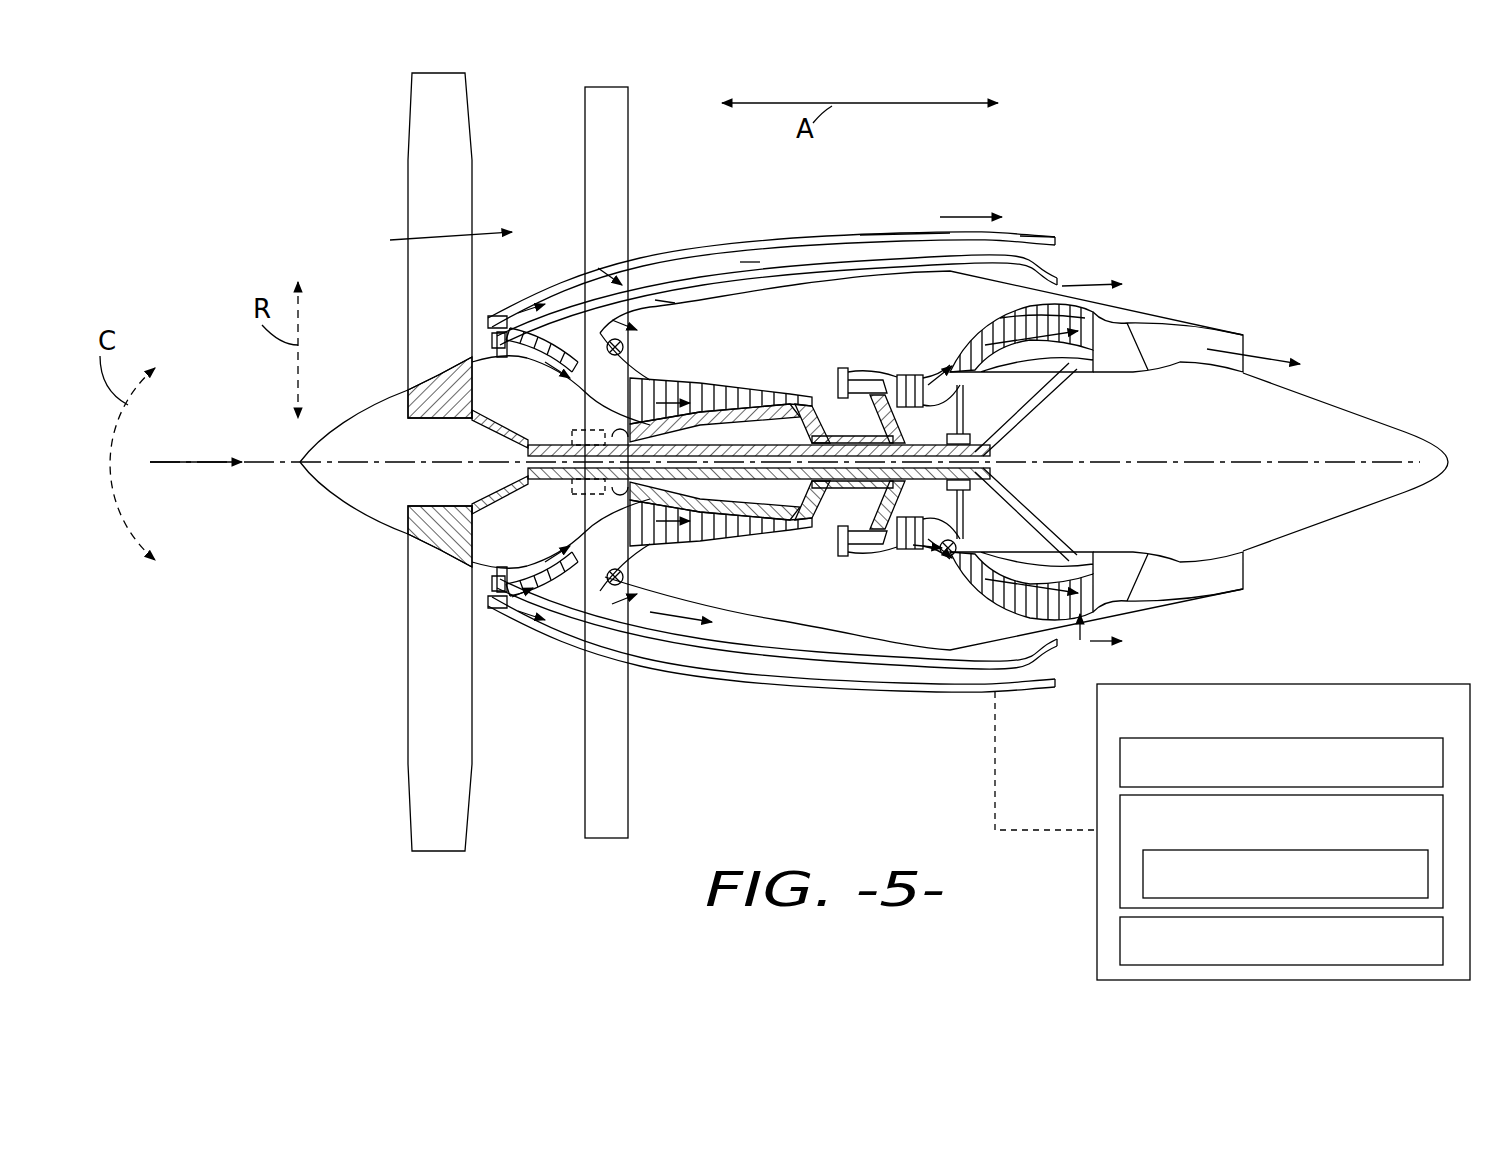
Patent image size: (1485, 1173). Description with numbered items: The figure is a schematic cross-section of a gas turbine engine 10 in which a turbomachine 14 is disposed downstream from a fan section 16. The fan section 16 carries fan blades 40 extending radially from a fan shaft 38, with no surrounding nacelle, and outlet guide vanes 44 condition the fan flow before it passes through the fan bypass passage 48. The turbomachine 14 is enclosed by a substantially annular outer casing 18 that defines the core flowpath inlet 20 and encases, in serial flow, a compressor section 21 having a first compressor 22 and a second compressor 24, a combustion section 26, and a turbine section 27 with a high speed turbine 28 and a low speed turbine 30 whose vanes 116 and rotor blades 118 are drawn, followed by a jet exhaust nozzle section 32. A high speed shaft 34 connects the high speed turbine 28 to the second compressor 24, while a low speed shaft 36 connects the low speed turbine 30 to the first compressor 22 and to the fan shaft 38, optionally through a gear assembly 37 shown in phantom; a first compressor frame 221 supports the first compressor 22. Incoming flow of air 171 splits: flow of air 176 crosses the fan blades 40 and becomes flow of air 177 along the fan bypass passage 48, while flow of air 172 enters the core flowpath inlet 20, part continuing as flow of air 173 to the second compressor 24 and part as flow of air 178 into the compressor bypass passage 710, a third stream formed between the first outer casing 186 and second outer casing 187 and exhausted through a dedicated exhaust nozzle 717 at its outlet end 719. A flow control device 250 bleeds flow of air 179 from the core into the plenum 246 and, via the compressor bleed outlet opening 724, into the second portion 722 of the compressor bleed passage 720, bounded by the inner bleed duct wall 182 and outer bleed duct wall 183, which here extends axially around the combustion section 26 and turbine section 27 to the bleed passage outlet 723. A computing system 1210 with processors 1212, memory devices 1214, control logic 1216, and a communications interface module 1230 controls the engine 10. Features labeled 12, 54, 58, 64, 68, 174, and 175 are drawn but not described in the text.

The engine 10 is at (1230, 212).
The longitudinal centerline axis 12 is at (1160, 457).
The turbomachine 14 is at (835, 305).
The fan section 16 is at (372, 568).
The outer casing 18 is at (837, 663).
The core flowpath inlet 20 is at (480, 605).
The compressor section 21 is at (683, 557).
The first compressor 22 is at (587, 557).
The second compressor 24 is at (707, 545).
The combustion section 26 is at (858, 540).
The turbine section 27 is at (1037, 242).
The high speed turbine 28 is at (958, 548).
The low speed turbine 30 is at (1080, 640).
The jet exhaust nozzle section 32 is at (1245, 338).
The high speed shaft 34 is at (1008, 463).
The low speed shaft 36 is at (580, 430).
The gear assembly 37 is at (598, 430).
The fan shaft 38 is at (428, 420).
The fan blades 40 is at (404, 597).
The outlet guide vanes 44 is at (628, 172).
The fan bypass passage 48 is at (813, 781).
The combustor liner 54 is at (883, 550).
The combustion chamber 58 is at (897, 560).
The turbine nozzle 64 is at (907, 560).
The turbine rotor 68 is at (923, 560).
The vanes 116 is at (983, 338).
The rotor blades 118 is at (1000, 318).
The flow of air 171 is at (193, 460).
The flow of air 172 is at (540, 322).
The flow of air 173 is at (647, 393).
The combustor 174 is at (833, 390).
The turbine support strut 175 is at (1016, 400).
The flow of air 176 is at (415, 235).
The flow of air 177 is at (953, 212).
The flow of air 178 is at (500, 318).
The flow of air 179 is at (660, 298).
The inner bleed duct wall 182 is at (850, 287).
The outer bleed duct wall 183 is at (880, 266).
The first outer casing 186 is at (903, 238).
The second outer casing 187 is at (803, 257).
The first compressor frame 221 is at (488, 627).
The plenum 246 is at (592, 630).
The flow control device 250 is at (633, 657).
The compressor bypass passage 710 is at (747, 260).
The exhaust nozzle 717 is at (1012, 303).
The outlet end 719 is at (1042, 667).
The compressor bleed passage 720 is at (757, 300).
The second portion of the compressor bleed passage 722 is at (730, 307).
The bleed passage outlet 723 is at (1063, 283).
The compressor bleed outlet opening 724 is at (600, 273).
The computing system 1210 is at (1188, 727).
The processors 1212 is at (1188, 777).
The memory devices 1214 is at (1188, 832).
The control logic 1216 is at (1212, 885).
The communications interface module 1230 is at (1188, 952).